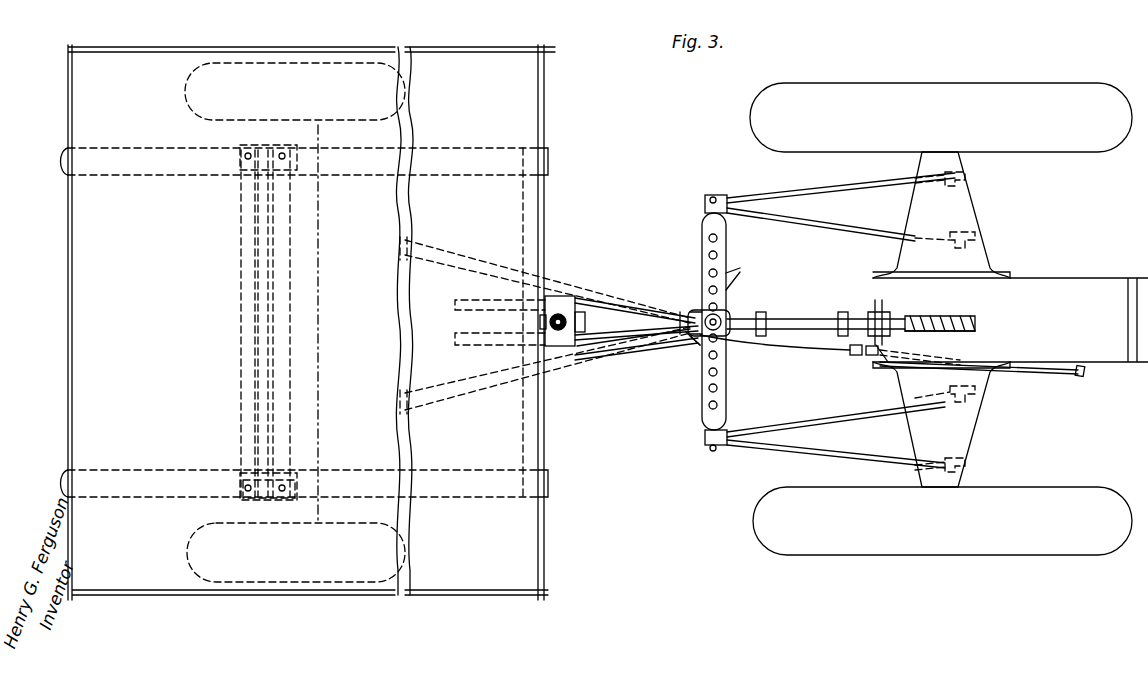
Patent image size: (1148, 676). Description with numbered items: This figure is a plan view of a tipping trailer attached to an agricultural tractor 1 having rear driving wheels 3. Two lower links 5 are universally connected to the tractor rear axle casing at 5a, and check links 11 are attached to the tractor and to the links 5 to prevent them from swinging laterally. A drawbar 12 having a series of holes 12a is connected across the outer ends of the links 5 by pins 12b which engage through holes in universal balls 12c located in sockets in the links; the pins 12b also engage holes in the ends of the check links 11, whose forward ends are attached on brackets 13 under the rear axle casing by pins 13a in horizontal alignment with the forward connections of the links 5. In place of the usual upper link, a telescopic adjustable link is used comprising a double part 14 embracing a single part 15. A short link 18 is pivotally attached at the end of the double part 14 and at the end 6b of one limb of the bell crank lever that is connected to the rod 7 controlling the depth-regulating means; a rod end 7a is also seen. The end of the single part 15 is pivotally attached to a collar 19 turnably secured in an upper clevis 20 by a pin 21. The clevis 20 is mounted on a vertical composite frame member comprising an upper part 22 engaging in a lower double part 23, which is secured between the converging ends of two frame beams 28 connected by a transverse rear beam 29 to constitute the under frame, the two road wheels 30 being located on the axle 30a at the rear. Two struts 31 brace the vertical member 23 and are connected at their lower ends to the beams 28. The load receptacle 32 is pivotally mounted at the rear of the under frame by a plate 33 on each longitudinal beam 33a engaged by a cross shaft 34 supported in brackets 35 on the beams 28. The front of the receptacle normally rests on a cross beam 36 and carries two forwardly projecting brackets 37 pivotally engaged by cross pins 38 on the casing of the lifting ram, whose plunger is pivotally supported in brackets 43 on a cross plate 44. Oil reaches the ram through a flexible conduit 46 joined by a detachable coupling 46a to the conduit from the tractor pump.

The agricultural tractor 1 is at (1010, 319).
The rear driving wheels 3 is at (1022, 540).
The lower links 5 is at (852, 243).
The universal connection of lower links 5a is at (978, 240).
The upper link connection end 6b is at (876, 362).
The rod 7 is at (940, 314).
The rod end 7a is at (960, 335).
The check links 11 is at (833, 175).
The drawbar 12 is at (727, 395).
The holes 12a is at (748, 273).
The pins 12b is at (710, 195).
The universal balls 12c is at (727, 215).
The brackets 13 is at (970, 182).
The pins 13a is at (955, 172).
The double part 14 is at (815, 318).
The single part 15 is at (778, 318).
The short link 18 is at (876, 300).
The collar 19 is at (728, 312).
The upper clevis 20 is at (712, 315).
The pin 21 is at (712, 335).
The upper part 22 is at (688, 310).
The lower double part 23 is at (690, 338).
The frame beams 28 is at (565, 300).
The transverse rear beam 29 is at (245, 350).
The road wheels 30 is at (357, 565).
The axle 30a is at (325, 410).
The struts 31 is at (592, 345).
The load receptacle 32 is at (160, 592).
The plate 33 is at (240, 497).
The longitudinal beams 33a is at (455, 470).
The cross shaft 34 is at (275, 313).
The brackets 35 is at (250, 470).
The cross beam 36 is at (540, 160).
The forwardly projecting brackets 37 is at (460, 330).
The cross pins 38 is at (562, 296).
The brackets 43 is at (548, 296).
The cross plate 44 is at (580, 340).
The flexible conduit 46 is at (622, 352).
The detachable coupling 46a is at (1060, 374).